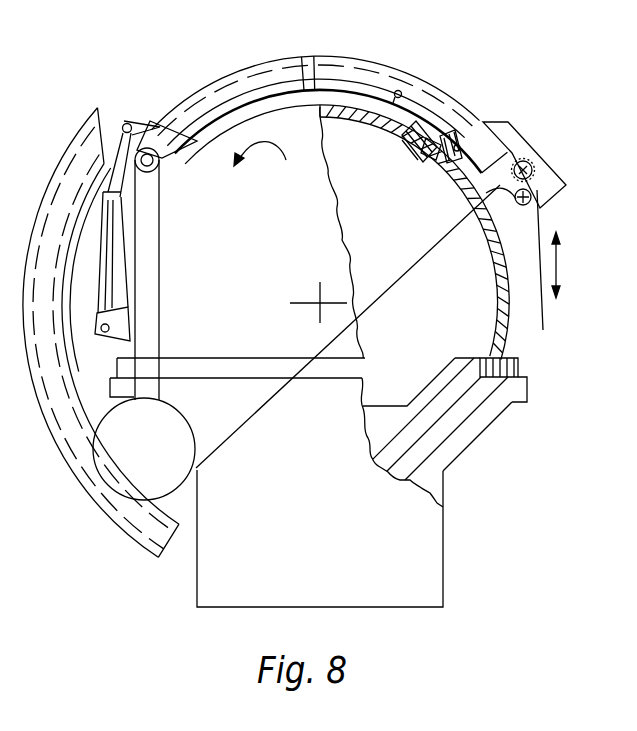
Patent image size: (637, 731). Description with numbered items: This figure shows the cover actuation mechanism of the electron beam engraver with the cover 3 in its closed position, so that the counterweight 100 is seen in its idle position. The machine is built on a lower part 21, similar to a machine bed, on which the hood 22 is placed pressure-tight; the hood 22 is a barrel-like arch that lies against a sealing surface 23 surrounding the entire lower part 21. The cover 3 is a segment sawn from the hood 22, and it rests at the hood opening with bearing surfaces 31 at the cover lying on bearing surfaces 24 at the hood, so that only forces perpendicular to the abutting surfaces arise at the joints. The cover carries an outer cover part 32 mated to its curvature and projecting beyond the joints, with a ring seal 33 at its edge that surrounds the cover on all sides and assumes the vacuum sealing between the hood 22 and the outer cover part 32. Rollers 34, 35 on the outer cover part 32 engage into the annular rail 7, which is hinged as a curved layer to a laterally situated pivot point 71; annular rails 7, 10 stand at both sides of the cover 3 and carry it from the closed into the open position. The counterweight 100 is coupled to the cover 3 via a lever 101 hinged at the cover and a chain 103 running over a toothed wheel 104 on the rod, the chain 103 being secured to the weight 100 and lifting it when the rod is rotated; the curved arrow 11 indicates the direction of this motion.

The annular rail 7 is at (258, 75).
The cover 3 is at (332, 108).
The outer cover part 32 is at (302, 56).
The roller 34 is at (397, 91).
The hood 22 is at (492, 244).
The bearing surfaces at the cover 31 is at (403, 144).
The bearing surfaces at the hood 24 is at (428, 158).
The ring seal 33 is at (453, 162).
The toothed wheel 104 is at (525, 159).
The pivot point 71 is at (521, 205).
The chain 103 is at (543, 232).
The direction of rotation 11 is at (270, 160).
The roller 35 is at (152, 128).
The lever 101 is at (150, 263).
The counterweight 100 is at (180, 433).
The sealing surface 23 is at (118, 363).
The annular rail 10 is at (80, 470).
The lower part 21 is at (423, 542).